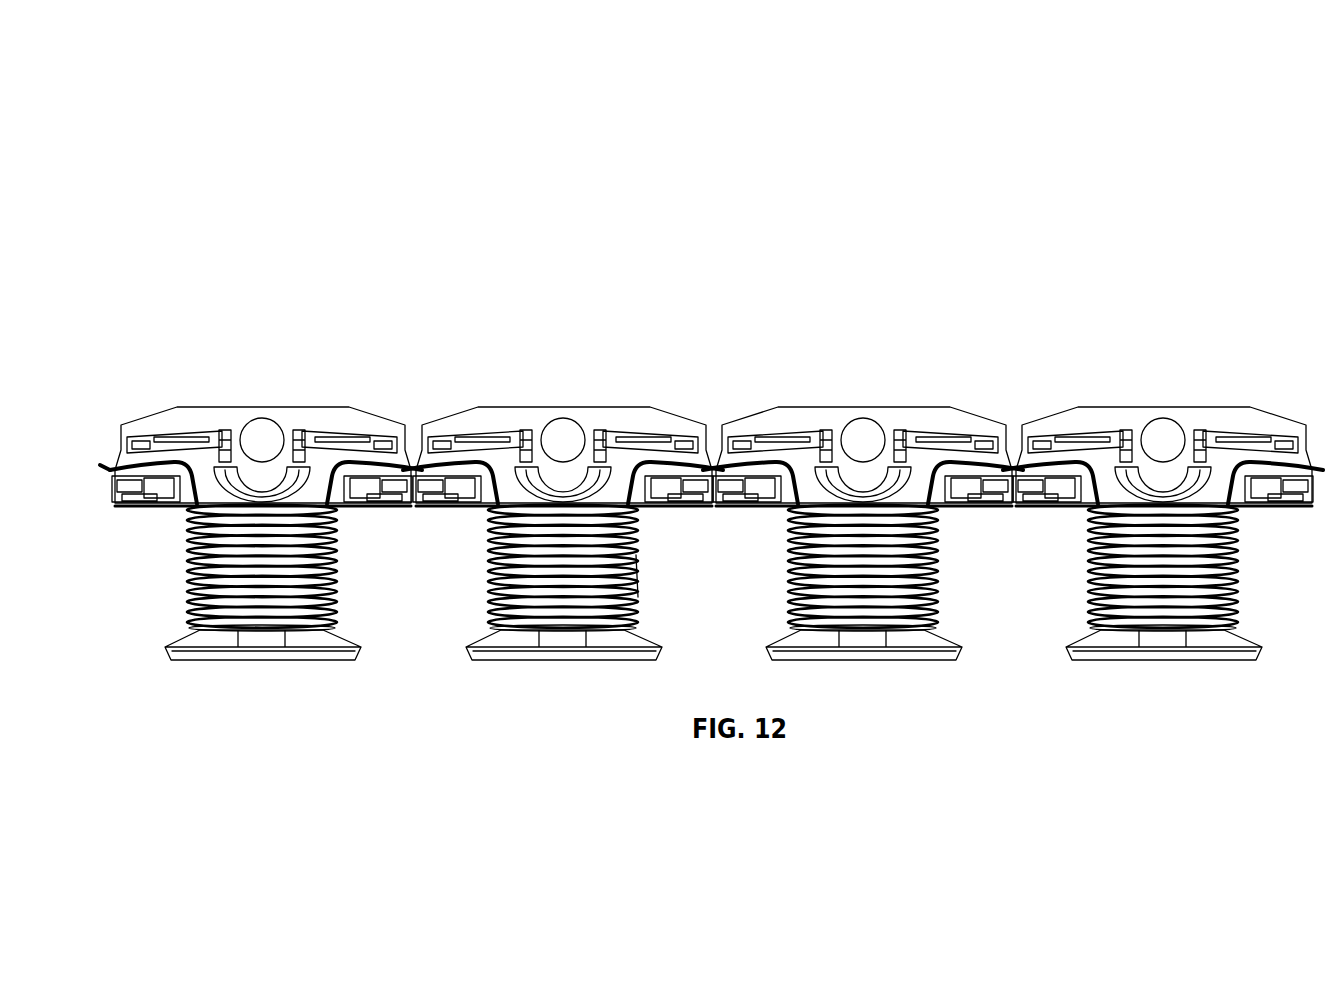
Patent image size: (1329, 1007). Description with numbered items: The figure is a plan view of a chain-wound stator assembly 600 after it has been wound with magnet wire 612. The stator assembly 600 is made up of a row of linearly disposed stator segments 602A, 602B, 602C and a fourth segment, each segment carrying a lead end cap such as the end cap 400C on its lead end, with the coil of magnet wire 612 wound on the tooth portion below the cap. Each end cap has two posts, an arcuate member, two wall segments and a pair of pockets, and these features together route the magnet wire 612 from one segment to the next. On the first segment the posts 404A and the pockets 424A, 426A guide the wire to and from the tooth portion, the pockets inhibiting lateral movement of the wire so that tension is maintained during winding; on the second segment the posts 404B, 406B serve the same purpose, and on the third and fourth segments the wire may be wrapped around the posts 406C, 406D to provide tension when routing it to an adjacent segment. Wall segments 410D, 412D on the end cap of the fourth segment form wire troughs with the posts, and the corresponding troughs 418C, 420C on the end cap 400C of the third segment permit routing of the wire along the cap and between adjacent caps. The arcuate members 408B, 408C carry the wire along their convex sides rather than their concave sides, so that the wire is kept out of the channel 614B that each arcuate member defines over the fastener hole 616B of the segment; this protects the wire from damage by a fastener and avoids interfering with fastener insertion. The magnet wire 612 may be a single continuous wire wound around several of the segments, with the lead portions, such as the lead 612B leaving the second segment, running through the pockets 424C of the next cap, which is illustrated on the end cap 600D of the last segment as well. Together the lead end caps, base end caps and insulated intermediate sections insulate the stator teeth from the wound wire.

The stator assembly 600 is at (932, 268).
The connector unit D 600D is at (1187, 432).
The end cap 400C is at (988, 440).
The post 404A is at (147, 453).
The post 404B is at (443, 497).
The post 406B is at (373, 480).
The post 406C is at (965, 510).
The post 406D is at (1265, 455).
The arcuate member 408B is at (535, 455).
The arcuate member 408C is at (875, 480).
The wall segment 410D is at (1062, 433).
The wall segment 412D is at (1220, 440).
The wire trough 418C is at (760, 448).
The wire trough 420C is at (942, 455).
The pocket 424A is at (197, 502).
The pocket 424C is at (790, 508).
The pocket 426A is at (335, 510).
The stator segment 602A is at (266, 632).
The stator segment 602B is at (568, 663).
The stator segment 602C is at (825, 452).
The magnet wire 612 is at (108, 482).
The lead wire B 612B is at (638, 597).
The channel 614B is at (585, 432).
The fastener hole 616B is at (563, 435).